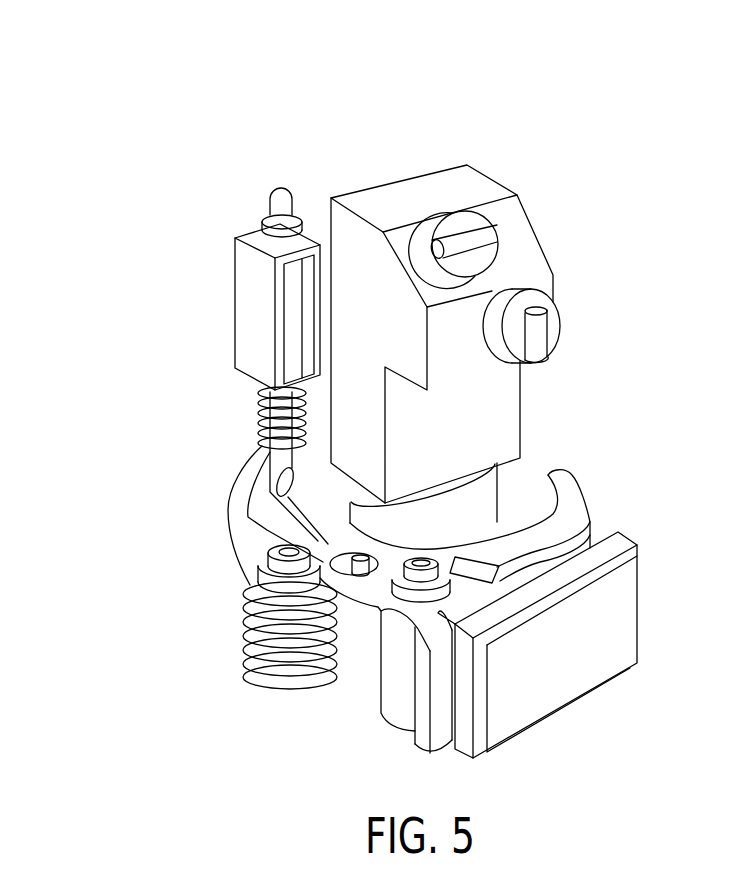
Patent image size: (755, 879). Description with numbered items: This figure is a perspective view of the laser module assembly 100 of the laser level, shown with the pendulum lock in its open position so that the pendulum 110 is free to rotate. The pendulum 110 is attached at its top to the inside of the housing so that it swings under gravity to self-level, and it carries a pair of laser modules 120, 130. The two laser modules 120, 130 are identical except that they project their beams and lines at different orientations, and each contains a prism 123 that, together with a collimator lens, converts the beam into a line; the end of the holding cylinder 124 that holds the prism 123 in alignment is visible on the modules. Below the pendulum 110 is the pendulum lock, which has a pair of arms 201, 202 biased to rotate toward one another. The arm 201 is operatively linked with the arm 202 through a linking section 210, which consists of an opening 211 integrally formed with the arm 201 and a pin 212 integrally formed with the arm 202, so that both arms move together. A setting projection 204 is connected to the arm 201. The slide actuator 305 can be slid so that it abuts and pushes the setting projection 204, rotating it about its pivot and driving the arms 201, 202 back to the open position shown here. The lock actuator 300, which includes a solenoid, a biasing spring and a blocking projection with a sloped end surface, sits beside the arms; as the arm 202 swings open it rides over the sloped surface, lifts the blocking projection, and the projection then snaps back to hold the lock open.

The laser module assembly 100 is at (676, 104).
The pendulum 110 is at (533, 218).
The laser module 120 is at (567, 329).
The prism 123 is at (468, 233).
The holding cylinder 124 is at (465, 226).
The laser module 130 is at (500, 222).
The arm 201 is at (563, 493).
The arm 202 is at (243, 518).
The setting projection 204 is at (438, 744).
The linking section 210 is at (355, 686).
The opening 211 is at (323, 562).
The pin 212 is at (358, 556).
The lock actuator 300 is at (117, 257).
The slide actuator 305 is at (568, 683).